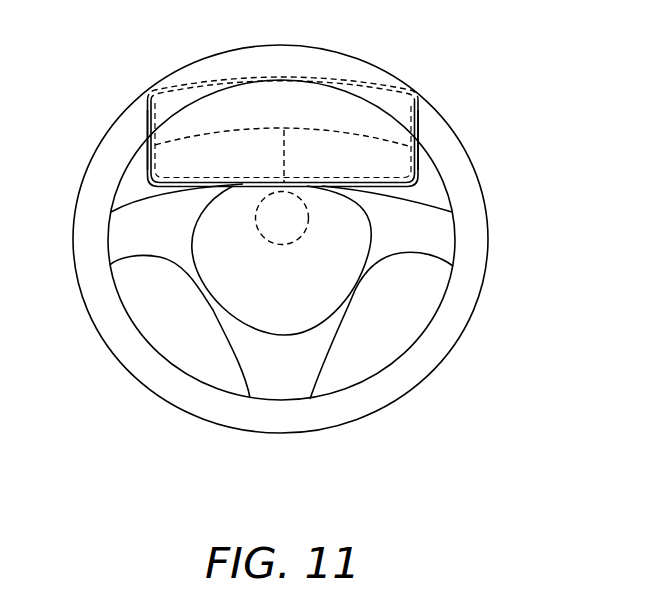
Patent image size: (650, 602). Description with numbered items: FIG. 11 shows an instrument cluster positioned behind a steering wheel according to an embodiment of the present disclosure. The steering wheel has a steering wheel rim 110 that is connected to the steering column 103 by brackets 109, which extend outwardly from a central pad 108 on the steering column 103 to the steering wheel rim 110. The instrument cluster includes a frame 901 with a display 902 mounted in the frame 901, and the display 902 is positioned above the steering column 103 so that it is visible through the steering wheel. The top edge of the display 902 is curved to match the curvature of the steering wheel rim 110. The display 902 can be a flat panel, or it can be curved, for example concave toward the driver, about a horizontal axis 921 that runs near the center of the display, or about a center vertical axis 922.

The steering wheel rim 110 is at (121, 357).
The brackets 109 is at (436, 233).
The central pad 108 is at (327, 277).
The steering column 103 is at (305, 228).
The display 902 is at (190, 165).
The frame 901 is at (147, 183).
The horizontal axis 921 is at (235, 130).
The center vertical axis 922 is at (287, 150).